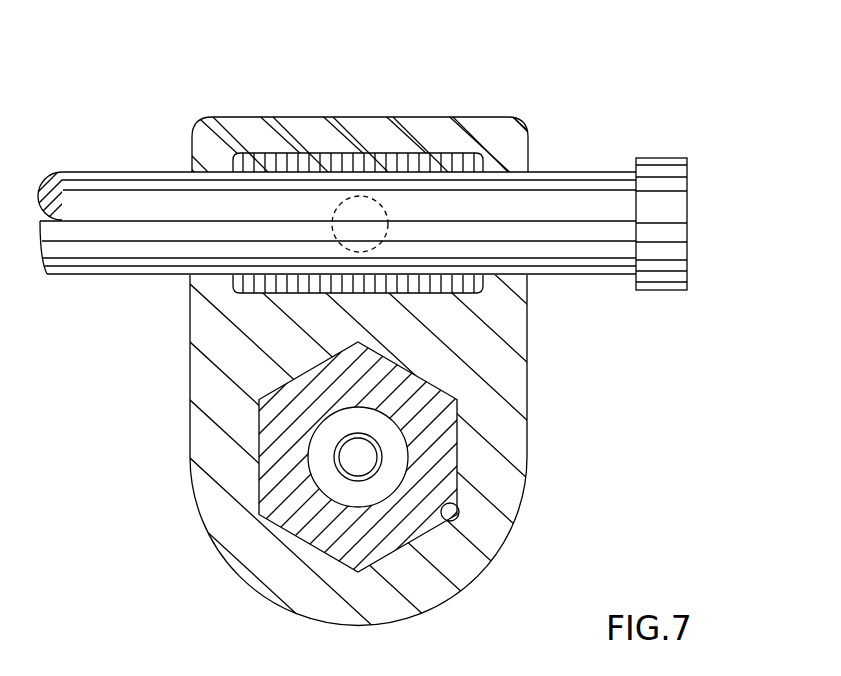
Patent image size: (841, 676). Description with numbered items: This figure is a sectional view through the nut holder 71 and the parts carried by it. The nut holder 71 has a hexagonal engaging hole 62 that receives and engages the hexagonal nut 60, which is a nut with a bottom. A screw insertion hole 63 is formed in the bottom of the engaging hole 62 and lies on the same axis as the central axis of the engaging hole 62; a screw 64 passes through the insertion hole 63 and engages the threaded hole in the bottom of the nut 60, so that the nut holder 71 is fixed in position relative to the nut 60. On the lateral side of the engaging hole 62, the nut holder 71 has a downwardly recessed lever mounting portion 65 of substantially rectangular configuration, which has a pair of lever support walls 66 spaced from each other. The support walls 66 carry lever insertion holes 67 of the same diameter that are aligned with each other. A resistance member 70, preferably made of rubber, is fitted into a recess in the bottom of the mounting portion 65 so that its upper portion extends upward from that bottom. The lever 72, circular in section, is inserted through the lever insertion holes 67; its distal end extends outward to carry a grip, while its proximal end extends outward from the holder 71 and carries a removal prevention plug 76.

The hexagonal nut 60 is at (448, 443).
The hexagonal engaging hole 62 is at (470, 530).
The screw insertion hole 63 is at (343, 452).
The screw 64 is at (366, 461).
The lever mounting portion 65 is at (410, 126).
The lever support walls 66 is at (213, 162).
The lever insertion holes 67 is at (208, 274).
The resistance member 70 is at (362, 212).
The nut holder 71 is at (186, 469).
The lever 72 is at (63, 247).
The removal prevention plug 76 is at (677, 218).